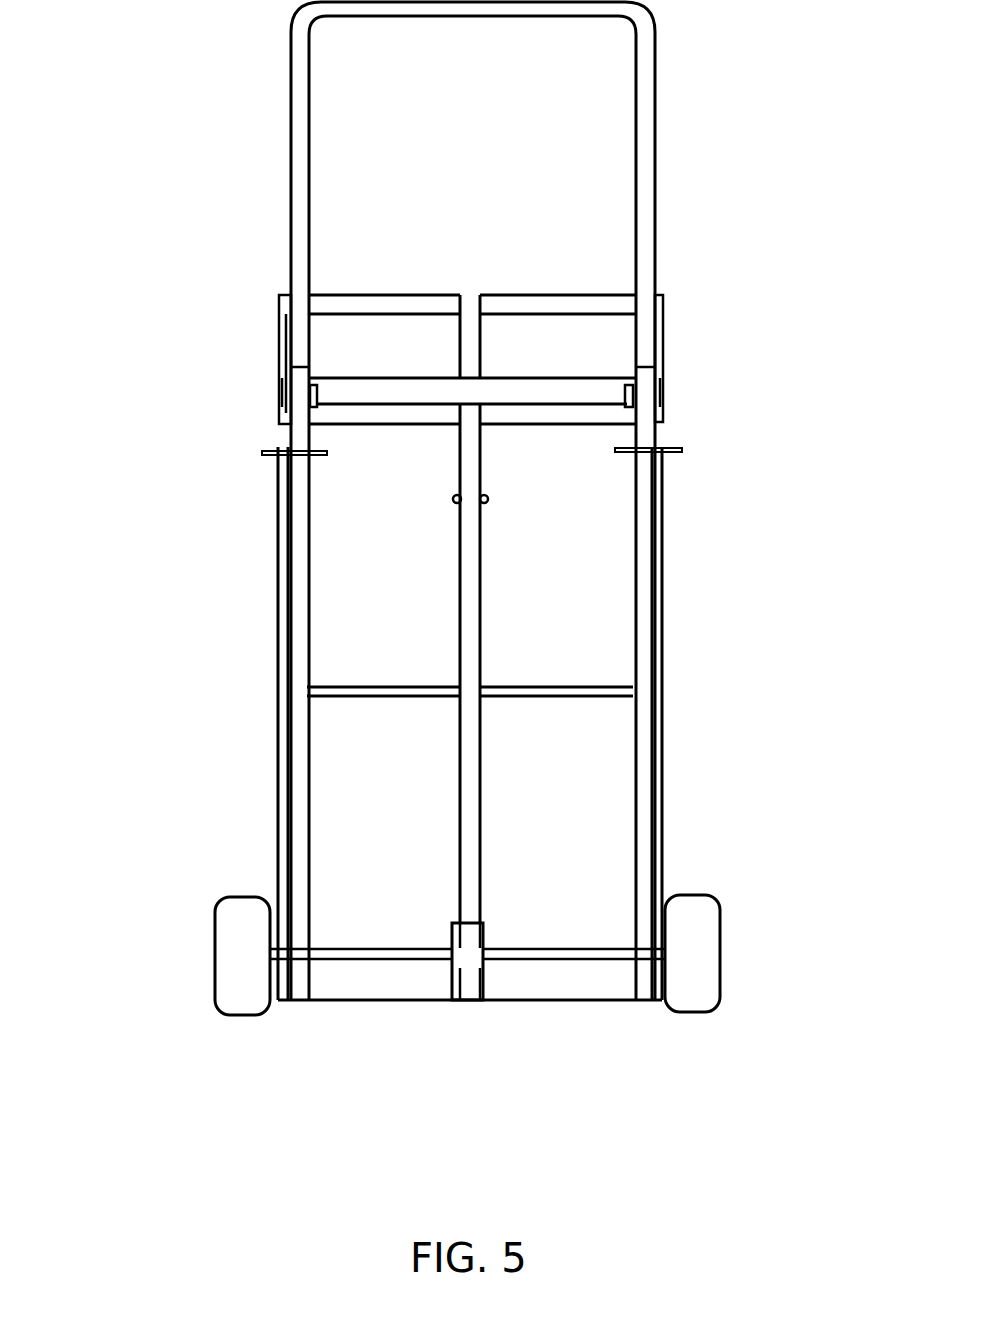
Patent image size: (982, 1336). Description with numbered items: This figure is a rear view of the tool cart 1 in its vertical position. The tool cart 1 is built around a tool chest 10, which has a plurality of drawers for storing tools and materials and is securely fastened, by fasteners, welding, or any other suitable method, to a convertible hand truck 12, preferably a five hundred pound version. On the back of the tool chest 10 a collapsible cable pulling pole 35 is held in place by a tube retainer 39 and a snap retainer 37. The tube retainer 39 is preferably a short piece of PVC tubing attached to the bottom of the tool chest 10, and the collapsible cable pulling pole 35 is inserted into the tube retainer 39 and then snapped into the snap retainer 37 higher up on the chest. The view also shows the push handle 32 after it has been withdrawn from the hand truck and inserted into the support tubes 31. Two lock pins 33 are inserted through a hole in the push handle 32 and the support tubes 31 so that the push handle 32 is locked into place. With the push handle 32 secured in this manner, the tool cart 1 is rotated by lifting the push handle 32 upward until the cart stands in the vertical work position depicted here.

The tool cart 1 is at (127, 1018).
The tool chest 10 is at (580, 628).
The convertible hand truck 12 is at (300, 718).
The support tubes 31 is at (300, 435).
The push handle 32 is at (655, 208).
The lock pins 33 is at (265, 458).
The collapsible cable pulling pole 35 is at (472, 827).
The snap retainer 37 is at (455, 500).
The tube retainer 39 is at (483, 965).